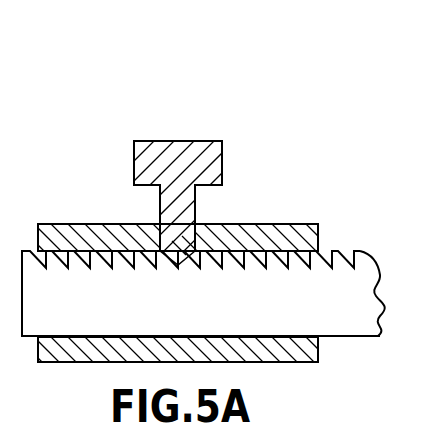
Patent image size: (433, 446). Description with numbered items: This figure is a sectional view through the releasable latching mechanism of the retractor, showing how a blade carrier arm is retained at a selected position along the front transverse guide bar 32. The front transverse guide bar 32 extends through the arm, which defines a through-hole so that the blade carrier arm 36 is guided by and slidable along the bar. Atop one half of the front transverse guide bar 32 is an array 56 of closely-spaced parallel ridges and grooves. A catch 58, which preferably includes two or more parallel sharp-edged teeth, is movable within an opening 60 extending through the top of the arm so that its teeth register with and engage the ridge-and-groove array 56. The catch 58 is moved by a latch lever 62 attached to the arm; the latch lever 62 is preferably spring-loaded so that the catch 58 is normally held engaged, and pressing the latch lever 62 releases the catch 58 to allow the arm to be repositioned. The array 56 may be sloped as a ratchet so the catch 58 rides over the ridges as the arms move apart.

The front transverse guide bar 32 is at (356, 336).
The blade carrier arm 36 is at (63, 362).
The ridge-and-groove array 56 is at (346, 250).
The catch 58 is at (186, 266).
The opening 60 is at (160, 235).
The latch lever 62 is at (180, 140).